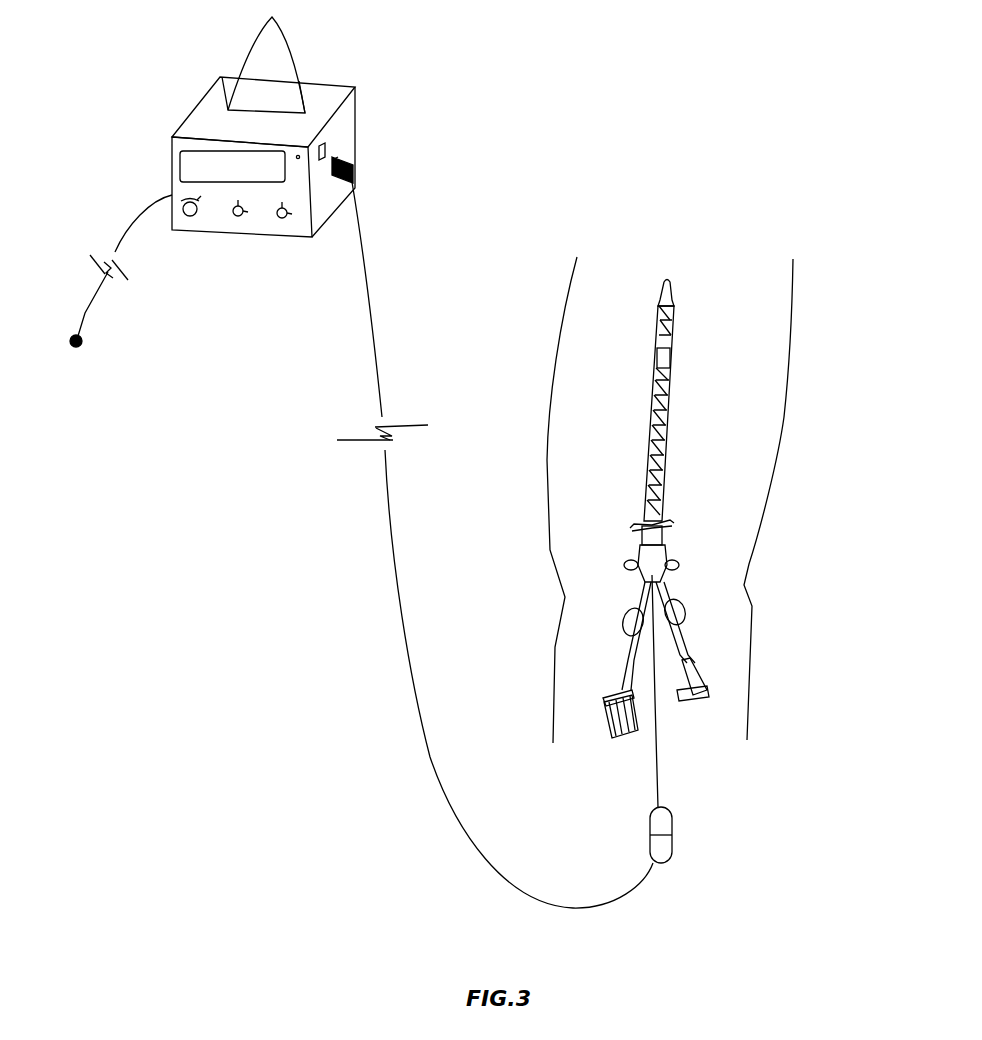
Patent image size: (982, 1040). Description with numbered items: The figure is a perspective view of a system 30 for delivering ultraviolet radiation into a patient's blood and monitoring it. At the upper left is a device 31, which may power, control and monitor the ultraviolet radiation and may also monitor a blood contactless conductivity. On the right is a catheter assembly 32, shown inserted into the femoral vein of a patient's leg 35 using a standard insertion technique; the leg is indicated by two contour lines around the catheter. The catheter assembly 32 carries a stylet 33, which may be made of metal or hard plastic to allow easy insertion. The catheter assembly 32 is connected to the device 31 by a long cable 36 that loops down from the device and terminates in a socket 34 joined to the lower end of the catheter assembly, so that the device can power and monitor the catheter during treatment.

The system 30 is at (690, 159).
The device 31 is at (398, 138).
The catheter assembly 32 is at (587, 544).
The stylet 33 is at (597, 717).
The socket 34 is at (670, 840).
The patient's leg 35 is at (786, 427).
The cable 36 is at (375, 323).